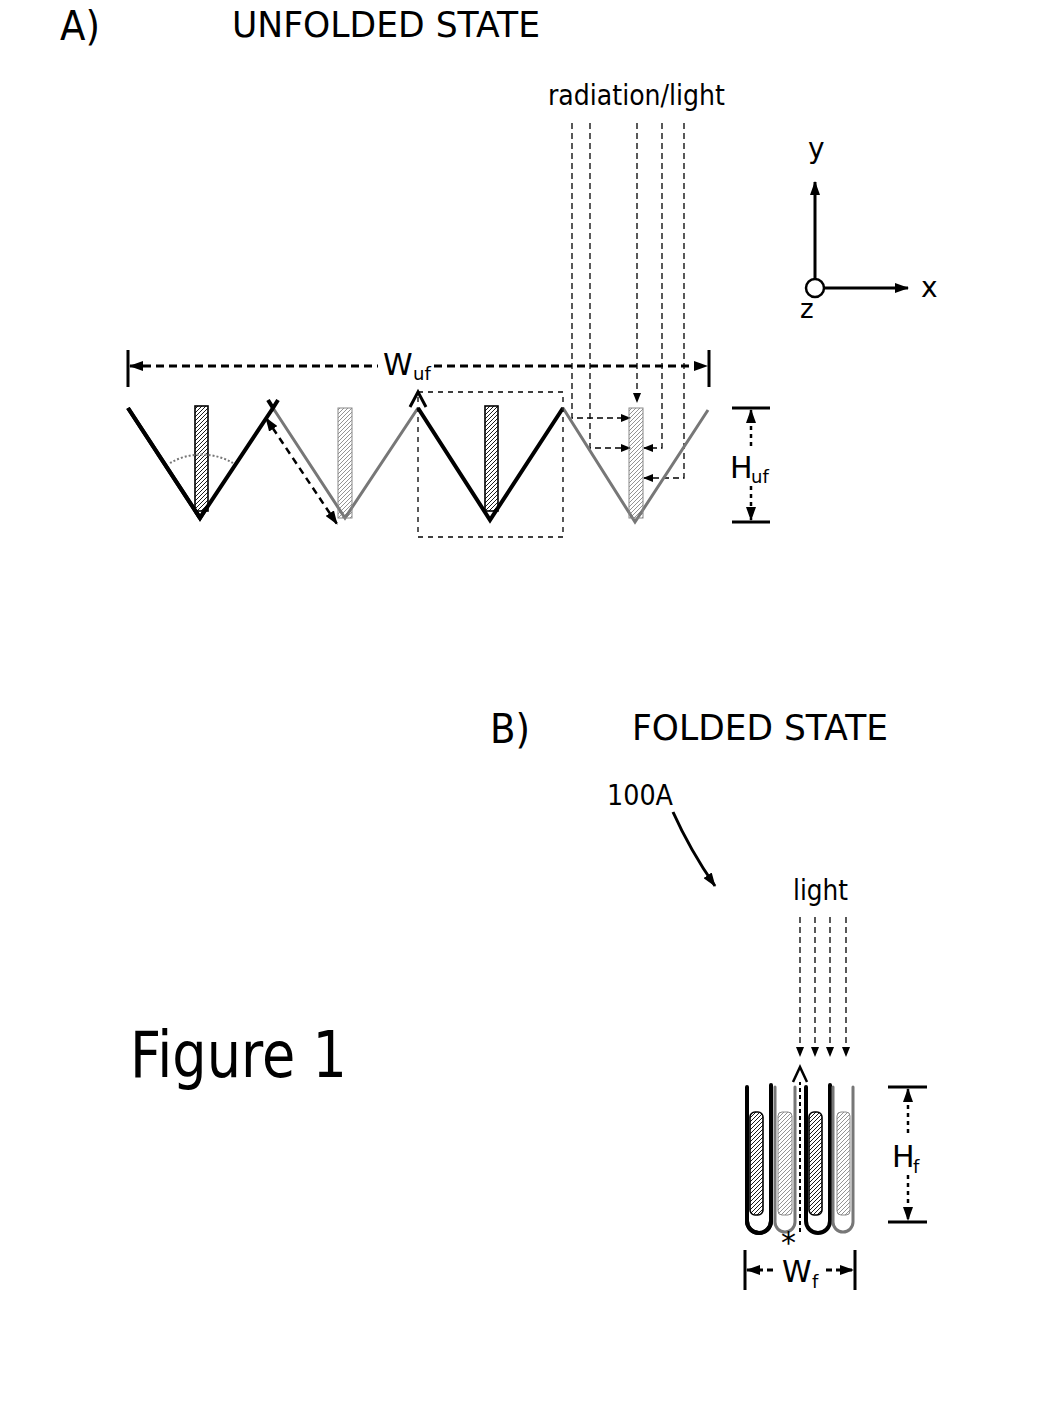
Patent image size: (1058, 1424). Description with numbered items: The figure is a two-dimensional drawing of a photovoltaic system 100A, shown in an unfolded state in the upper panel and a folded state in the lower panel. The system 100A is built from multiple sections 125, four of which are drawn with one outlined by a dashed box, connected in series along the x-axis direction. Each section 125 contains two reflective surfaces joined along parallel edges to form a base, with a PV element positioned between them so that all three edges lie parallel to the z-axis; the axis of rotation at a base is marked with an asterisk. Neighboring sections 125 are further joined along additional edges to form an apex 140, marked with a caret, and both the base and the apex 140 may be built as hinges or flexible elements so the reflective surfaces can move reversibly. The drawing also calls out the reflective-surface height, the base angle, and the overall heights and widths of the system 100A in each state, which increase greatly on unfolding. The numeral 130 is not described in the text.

The photovoltaic system 100A is at (206, 193).
The section 125 is at (522, 523).
The substrate end panel 130 is at (127, 409).
The apex 140 is at (275, 405).